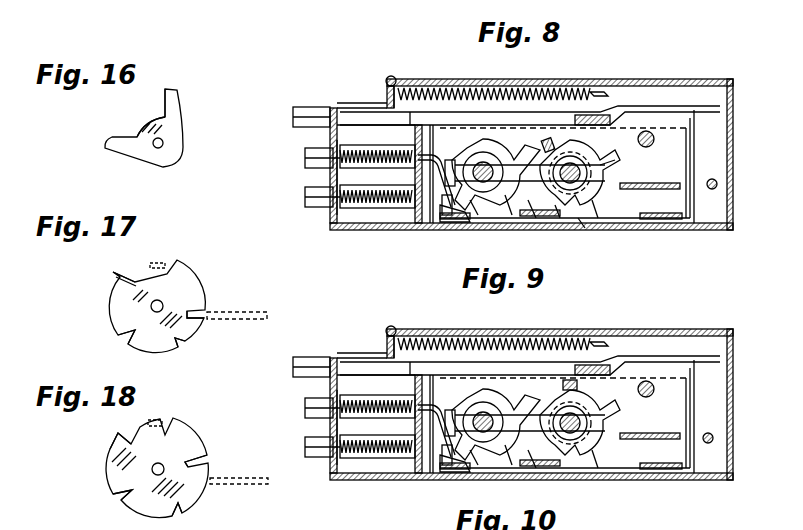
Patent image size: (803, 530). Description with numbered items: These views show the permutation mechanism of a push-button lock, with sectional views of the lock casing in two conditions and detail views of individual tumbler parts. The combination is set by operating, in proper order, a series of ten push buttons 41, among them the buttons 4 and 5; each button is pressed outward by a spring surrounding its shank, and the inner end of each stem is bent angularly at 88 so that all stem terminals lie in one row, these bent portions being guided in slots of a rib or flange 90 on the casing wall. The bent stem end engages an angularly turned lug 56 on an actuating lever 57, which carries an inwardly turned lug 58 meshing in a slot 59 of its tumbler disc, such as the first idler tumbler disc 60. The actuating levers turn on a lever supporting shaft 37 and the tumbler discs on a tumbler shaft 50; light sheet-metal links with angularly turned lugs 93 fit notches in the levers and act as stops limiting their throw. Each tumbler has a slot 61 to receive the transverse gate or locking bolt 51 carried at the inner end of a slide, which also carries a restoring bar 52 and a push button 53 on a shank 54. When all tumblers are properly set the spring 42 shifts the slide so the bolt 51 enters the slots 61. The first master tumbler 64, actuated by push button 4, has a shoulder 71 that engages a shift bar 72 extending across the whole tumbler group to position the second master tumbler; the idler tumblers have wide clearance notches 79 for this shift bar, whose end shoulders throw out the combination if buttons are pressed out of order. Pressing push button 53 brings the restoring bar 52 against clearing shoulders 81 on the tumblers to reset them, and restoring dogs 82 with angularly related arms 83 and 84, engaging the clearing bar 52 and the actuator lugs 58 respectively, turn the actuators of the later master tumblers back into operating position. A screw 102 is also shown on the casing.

In FIG. 8, the push button 4 is at (322, 158).
In FIG. 9, the push button 4 is at (322, 408).
In FIG. 8, the push button 5 is at (322, 197).
In FIG. 9, the push button 5 is at (322, 447).
In FIG. 8, the lever supporting shaft 37 is at (490, 168).
In FIG. 9, the lever supporting shaft 37 is at (490, 418).
In FIG. 8, the push buttons 41 is at (305, 162).
In FIG. 9, the push buttons 41 is at (305, 412).
In FIG. 8, the spring 42 is at (550, 88).
In FIG. 9, the spring 42 is at (524, 330).
In FIG. 8, the tumbler shaft 50 is at (582, 170).
In FIG. 9, the tumbler shaft 50 is at (580, 422).
In FIG. 8, the transverse bar (gate or locking bolt) 51 is at (646, 183).
In FIG. 9, the transverse bar (gate or locking bolt) 51 is at (645, 433).
In FIG. 17, the transverse bar (gate or locking bolt) 51 is at (246, 318).
In FIG. 18, the transverse bar (gate or locking bolt) 51 is at (240, 483).
In FIG. 8, the restoring bar 52 is at (586, 230).
In FIG. 8, the push button 53 is at (310, 108).
In FIG. 9, the push button 53 is at (300, 358).
In FIG. 8, the shank 54 is at (440, 120).
In FIG. 9, the shank 54 is at (444, 372).
In FIG. 8, the angularly turned lug 56 is at (478, 215).
In FIG. 9, the angularly turned lug 56 is at (478, 465).
In FIG. 8, the lever 57 is at (510, 215).
In FIG. 9, the lever 57 is at (512, 465).
In FIG. 8, the inwardly turned lug 58 is at (536, 220).
In FIG. 9, the inwardly turned lug 58 is at (538, 470).
In FIG. 8, the slot 59 is at (562, 222).
In FIG. 17, the slot 59 is at (127, 340).
In FIG. 18, the slot 59 is at (126, 496).
In FIG. 17, the first tumbler disc 60 is at (193, 292).
In FIG. 8, the slot 61 is at (606, 166).
In FIG. 17, the slot 61 is at (205, 318).
In FIG. 18, the slot 61 is at (195, 461).
In FIG. 8, the master tumbler 64 is at (598, 220).
In FIG. 9, the master tumbler 64 is at (598, 470).
In FIG. 18, the master tumbler 64 is at (188, 437).
In FIG. 18, the shoulder 71 is at (132, 440).
In FIG. 8, the shift bar 72 is at (550, 140).
In FIG. 9, the shift bar 72 is at (578, 382).
In FIG. 17, the shift bar 72 is at (149, 265).
In FIG. 18, the shift bar 72 is at (158, 426).
In FIG. 17, the clearance notch 79 is at (113, 272).
In FIG. 17, the clearing shoulder 81 is at (178, 347).
In FIG. 18, the clearing shoulder 81 is at (177, 508).
In FIG. 16, the restoring dog 82 is at (183, 147).
In FIG. 16, the arm 83 is at (178, 99).
In FIG. 16, the arm 84 is at (118, 144).
In FIG. 8, the angularly bent inner end 88 is at (445, 205).
In FIG. 9, the angularly bent inner end 88 is at (436, 410).
In FIG. 8, the rib or flange 90 is at (455, 222).
In FIG. 9, the rib or flange 90 is at (455, 472).
In FIG. 8, the angularly turned lug 93 is at (449, 160).
In FIG. 8, the screw 102 is at (718, 185).
In FIG. 9, the screw 102 is at (709, 432).